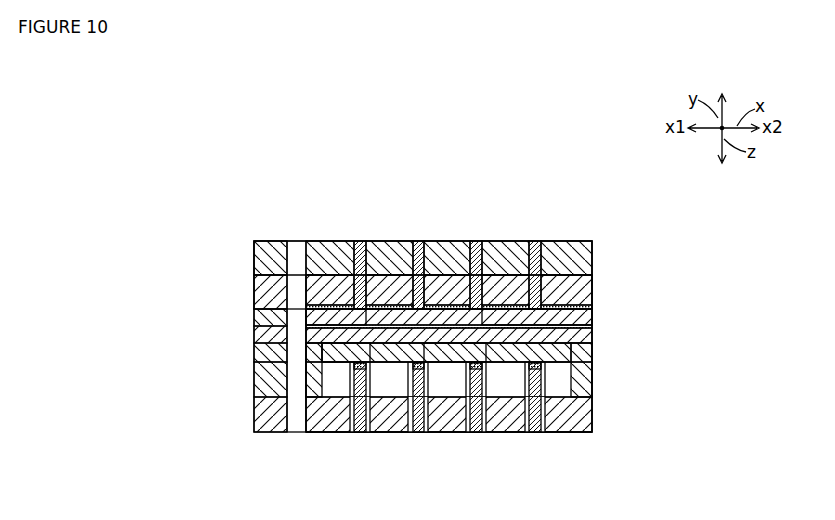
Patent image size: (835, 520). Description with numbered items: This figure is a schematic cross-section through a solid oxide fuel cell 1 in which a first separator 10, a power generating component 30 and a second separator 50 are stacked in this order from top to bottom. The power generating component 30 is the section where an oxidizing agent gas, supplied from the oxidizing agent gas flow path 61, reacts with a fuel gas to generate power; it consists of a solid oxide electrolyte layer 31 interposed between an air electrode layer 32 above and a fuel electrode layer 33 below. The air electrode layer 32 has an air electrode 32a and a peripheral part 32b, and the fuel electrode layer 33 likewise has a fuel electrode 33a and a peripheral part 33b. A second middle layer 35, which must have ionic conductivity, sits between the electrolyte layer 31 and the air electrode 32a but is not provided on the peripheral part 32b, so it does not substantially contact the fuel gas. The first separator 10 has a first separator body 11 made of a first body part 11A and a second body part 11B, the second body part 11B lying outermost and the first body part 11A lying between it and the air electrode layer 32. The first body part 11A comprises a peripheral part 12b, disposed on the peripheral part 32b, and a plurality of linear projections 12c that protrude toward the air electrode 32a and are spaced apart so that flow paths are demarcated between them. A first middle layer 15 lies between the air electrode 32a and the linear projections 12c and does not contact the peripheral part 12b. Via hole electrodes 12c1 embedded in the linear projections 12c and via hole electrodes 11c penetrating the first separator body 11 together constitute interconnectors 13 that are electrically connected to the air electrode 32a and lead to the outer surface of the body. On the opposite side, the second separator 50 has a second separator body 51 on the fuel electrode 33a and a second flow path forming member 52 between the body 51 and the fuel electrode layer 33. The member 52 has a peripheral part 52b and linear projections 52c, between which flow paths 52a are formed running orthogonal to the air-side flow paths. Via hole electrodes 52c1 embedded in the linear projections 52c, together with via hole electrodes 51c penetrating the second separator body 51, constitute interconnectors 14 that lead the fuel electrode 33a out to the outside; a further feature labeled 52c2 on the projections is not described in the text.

The solid oxide fuel cell 1 is at (617, 189).
The first separator 10 is at (597, 247).
The first separator body 11 is at (175, 231).
The first body part 11A is at (251, 287).
The second body part 11B is at (251, 262).
The via hole electrodes 11c is at (534, 239).
The peripheral part 12b is at (251, 303).
The linear projections 12c is at (597, 282).
The via hole electrodes 12c1 is at (541, 301).
The interconnectors 13 is at (413, 239).
The interconnectors 14 is at (418, 436).
The first middle layer 15 is at (463, 302).
The power generating component 30 is at (663, 300).
The solid oxide electrolyte layer 31 is at (594, 338).
The air electrode layer 32 is at (597, 320).
The air electrode 32a is at (510, 310).
The peripheral part 32b is at (275, 313).
The fuel electrode layer 33 is at (597, 351).
The fuel electrode 33a is at (452, 356).
The peripheral part 33b is at (275, 362).
The second middle layer 35 is at (380, 322).
The second separator 50 is at (187, 368).
The second separator body 51 is at (254, 410).
The via hole electrodes 51c is at (541, 410).
The second flow path forming member 52 is at (254, 378).
The flow paths 52a is at (347, 382).
The peripheral part 52b is at (594, 370).
The linear projections 52c is at (551, 380).
The via hole electrodes 52c1 is at (548, 388).
The pillar lower end 52c2 is at (363, 410).
The oxidizing agent gas flow path 61 is at (304, 262).